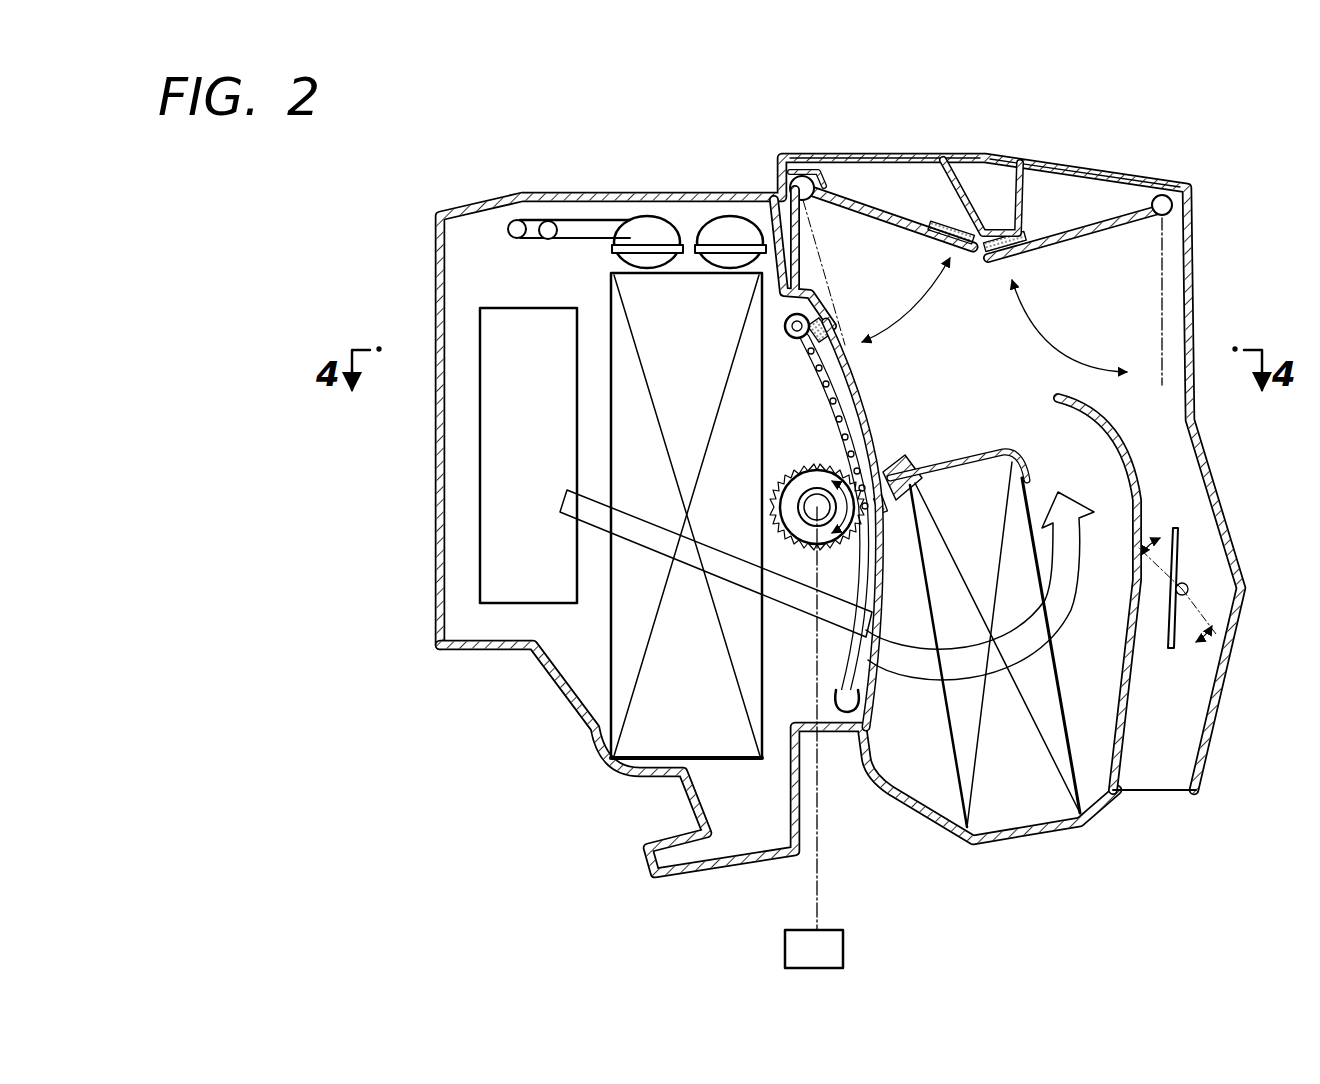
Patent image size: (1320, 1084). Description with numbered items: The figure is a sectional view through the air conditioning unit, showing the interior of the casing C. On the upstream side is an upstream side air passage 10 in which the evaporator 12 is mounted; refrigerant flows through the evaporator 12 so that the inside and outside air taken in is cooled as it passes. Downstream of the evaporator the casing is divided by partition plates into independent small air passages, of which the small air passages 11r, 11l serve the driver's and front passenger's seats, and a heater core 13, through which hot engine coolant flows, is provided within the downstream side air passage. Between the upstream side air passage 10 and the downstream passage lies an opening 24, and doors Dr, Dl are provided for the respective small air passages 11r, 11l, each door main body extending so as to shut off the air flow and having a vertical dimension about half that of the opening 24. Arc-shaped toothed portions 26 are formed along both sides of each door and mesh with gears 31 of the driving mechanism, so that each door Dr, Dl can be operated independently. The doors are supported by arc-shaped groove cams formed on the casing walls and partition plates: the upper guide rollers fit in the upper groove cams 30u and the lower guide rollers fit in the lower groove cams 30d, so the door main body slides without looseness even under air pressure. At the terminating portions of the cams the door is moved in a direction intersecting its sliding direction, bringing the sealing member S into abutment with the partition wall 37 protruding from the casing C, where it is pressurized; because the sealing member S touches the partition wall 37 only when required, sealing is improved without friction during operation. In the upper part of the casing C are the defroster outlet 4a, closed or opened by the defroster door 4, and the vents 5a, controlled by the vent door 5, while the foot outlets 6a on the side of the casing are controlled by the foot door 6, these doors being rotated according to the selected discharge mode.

The casing C is at (466, 192).
The defroster outlet 4a is at (892, 170).
The vents 5a is at (1087, 190).
The defroster door 4 is at (877, 220).
The vent door 5 is at (1090, 238).
The partition wall 37 is at (828, 310).
The sealing member S is at (830, 336).
The toothed portions 26 is at (805, 520).
The upper groove cams 30u is at (845, 513).
The lower groove cams 30d is at (877, 582).
The gears 31 is at (803, 481).
The door Dr is at (922, 454).
The door Dl is at (870, 414).
The small air passage 11r is at (966, 679).
The small air passage 11l is at (966, 679).
The heater core 13 is at (1024, 805).
The opening 24 is at (886, 660).
The foot outlets 6a is at (1163, 778).
The foot door 6 is at (1183, 575).
The evaporator 12 is at (643, 738).
The upstream side air passage 10 is at (577, 664).